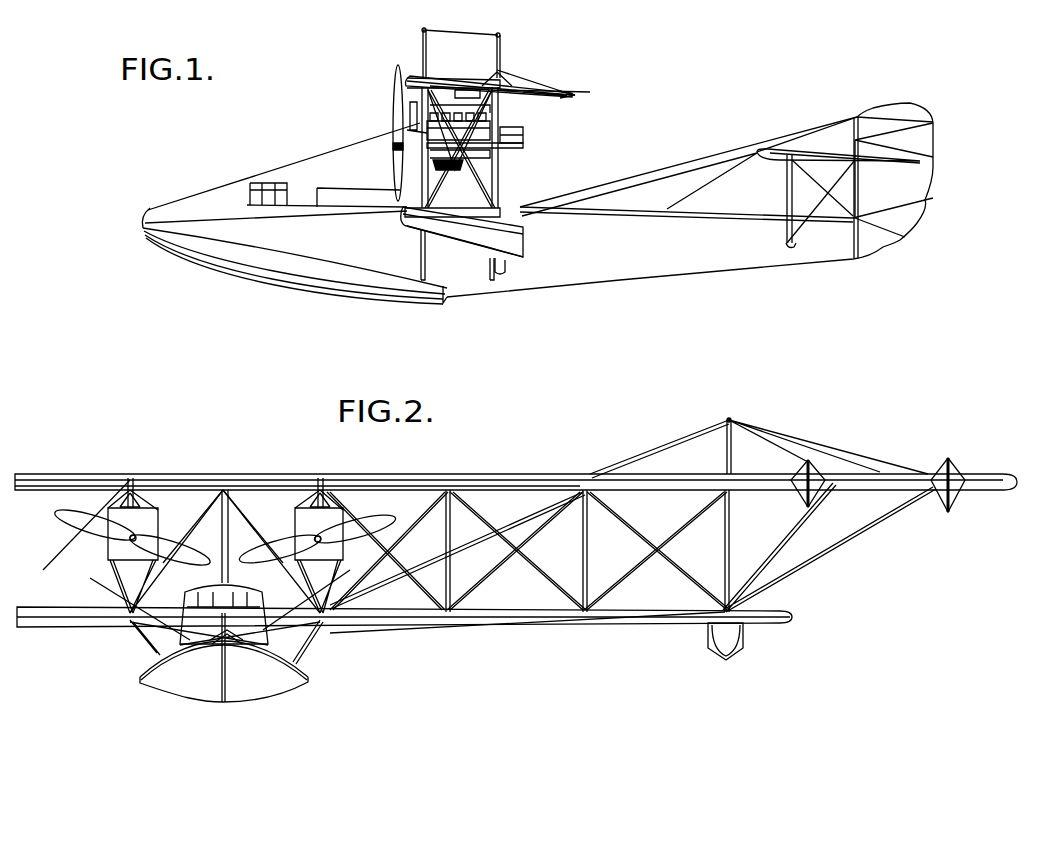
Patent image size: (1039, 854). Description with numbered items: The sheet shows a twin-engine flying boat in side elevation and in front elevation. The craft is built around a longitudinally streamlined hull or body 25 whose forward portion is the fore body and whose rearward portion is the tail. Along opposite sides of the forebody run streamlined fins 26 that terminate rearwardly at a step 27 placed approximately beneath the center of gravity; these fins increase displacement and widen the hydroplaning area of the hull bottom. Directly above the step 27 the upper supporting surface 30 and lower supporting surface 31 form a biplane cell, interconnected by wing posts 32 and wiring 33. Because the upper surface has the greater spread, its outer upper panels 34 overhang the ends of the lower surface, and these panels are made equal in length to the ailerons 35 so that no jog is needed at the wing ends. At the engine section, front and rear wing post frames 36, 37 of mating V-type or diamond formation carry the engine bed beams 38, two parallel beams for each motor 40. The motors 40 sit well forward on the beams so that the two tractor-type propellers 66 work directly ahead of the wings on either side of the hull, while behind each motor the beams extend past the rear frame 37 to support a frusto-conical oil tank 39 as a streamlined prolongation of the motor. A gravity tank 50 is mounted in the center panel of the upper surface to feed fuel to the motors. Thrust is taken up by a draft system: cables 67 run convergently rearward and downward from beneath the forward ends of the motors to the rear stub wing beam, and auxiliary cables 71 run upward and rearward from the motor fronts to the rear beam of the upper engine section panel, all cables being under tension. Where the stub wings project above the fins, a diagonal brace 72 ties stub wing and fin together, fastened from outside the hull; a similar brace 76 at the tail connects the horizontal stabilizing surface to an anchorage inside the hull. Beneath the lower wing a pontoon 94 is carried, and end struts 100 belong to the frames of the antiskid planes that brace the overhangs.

In FIG. 1, the hull 25 is at (690, 200).
In FIG. 2, the hull 25 is at (257, 625).
In FIG. 1, the fins 26 is at (253, 260).
In FIG. 2, the fins 26 is at (245, 677).
In FIG. 1, the step 27 is at (443, 293).
In FIG. 1, the upper supporting surface 30 is at (413, 72).
In FIG. 2, the upper supporting surface 30 is at (365, 480).
In FIG. 1, the lower supporting surface 31 is at (477, 213).
In FIG. 2, the lower supporting surface 31 is at (383, 624).
In FIG. 1, the wing posts 32 is at (493, 167).
In FIG. 2, the wing posts 32 is at (448, 530).
In FIG. 2, the wiring 33 is at (632, 528).
In FIG. 1, the outer upper panels 34 is at (500, 70).
In FIG. 2, the outer upper panels 34 is at (888, 473).
In FIG. 1, the ailerons 35 is at (567, 93).
In FIG. 2, the ailerons 35 is at (990, 493).
In FIG. 2, the front wing post frame 36 is at (112, 567).
In FIG. 2, the rear wing post frame 37 is at (330, 580).
In FIG. 1, the engine bed beams 38 is at (513, 137).
In FIG. 1, the oil tank 39 is at (523, 140).
In FIG. 1, the motor 40 is at (453, 110).
In FIG. 1, the gravity tank 50 is at (470, 97).
In FIG. 1, the propellers 66 is at (397, 110).
In FIG. 1, the cables 67 is at (460, 193).
In FIG. 1, the cables 71 is at (517, 103).
In FIG. 1, the diagonal brace 72 is at (428, 263).
In FIG. 2, the diagonal brace 72 is at (312, 633).
In FIG. 1, the brace 76 is at (793, 232).
In FIG. 1, the pontoon 94 is at (508, 250).
In FIG. 2, the pontoon 94 is at (733, 643).
In FIG. 1, the end struts 100 is at (422, 40).
In FIG. 2, the end struts 100 is at (730, 453).